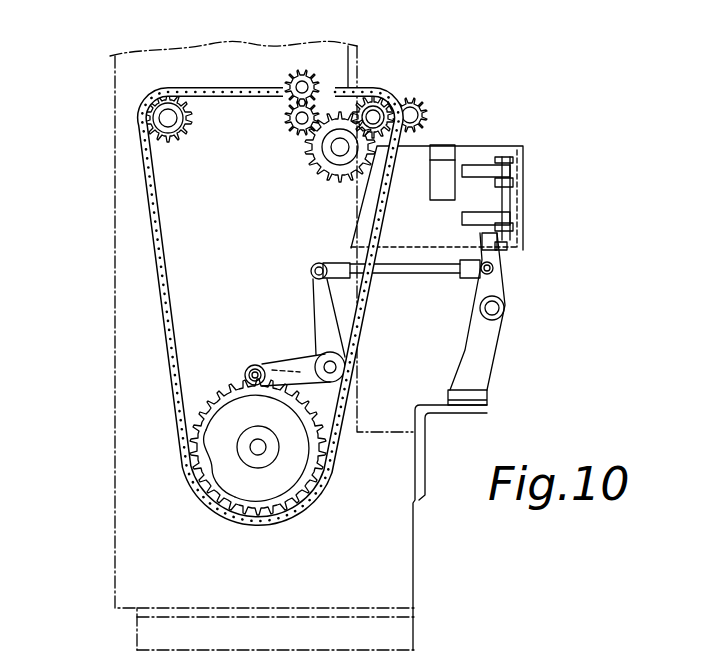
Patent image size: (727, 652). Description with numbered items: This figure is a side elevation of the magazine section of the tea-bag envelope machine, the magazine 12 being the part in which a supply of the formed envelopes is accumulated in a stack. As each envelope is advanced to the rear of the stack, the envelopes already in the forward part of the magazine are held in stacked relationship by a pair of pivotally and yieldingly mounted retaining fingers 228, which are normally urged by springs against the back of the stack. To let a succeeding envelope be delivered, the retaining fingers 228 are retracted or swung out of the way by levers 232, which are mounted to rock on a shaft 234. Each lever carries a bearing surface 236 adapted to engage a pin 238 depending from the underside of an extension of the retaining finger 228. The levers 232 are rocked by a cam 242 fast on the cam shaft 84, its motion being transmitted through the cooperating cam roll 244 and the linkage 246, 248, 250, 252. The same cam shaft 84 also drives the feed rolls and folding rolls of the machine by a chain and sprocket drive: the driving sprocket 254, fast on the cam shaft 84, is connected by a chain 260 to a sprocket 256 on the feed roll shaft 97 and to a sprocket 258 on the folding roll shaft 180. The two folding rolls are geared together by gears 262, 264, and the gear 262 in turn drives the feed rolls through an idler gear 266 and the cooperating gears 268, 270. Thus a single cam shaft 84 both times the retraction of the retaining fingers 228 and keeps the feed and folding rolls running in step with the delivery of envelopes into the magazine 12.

The machine frame 12 is at (493, 147).
The cam shaft 84 is at (262, 451).
The feed roll shaft 97 is at (172, 124).
The folding roll shaft 180 is at (388, 102).
The retaining fingers 228 is at (513, 230).
The levers 232 is at (502, 270).
The shaft 234 is at (495, 315).
The bearing surfaces 236 is at (500, 253).
The pins 238 is at (507, 243).
The cam 242 is at (307, 455).
The cam roll 244 is at (252, 370).
The linkage 246 is at (317, 357).
The linkage 248 is at (312, 293).
The linkage 250 is at (397, 273).
The linkage 252 is at (503, 290).
The driving sprocket 254 is at (243, 368).
The sprocket 256 is at (196, 118).
The sprocket 258 is at (303, 50).
The chain 260 is at (163, 243).
The gear 262 is at (385, 85).
The gear 264 is at (418, 110).
The idler gear 266 is at (328, 178).
The gear 268 is at (287, 133).
The gear 270 is at (292, 78).